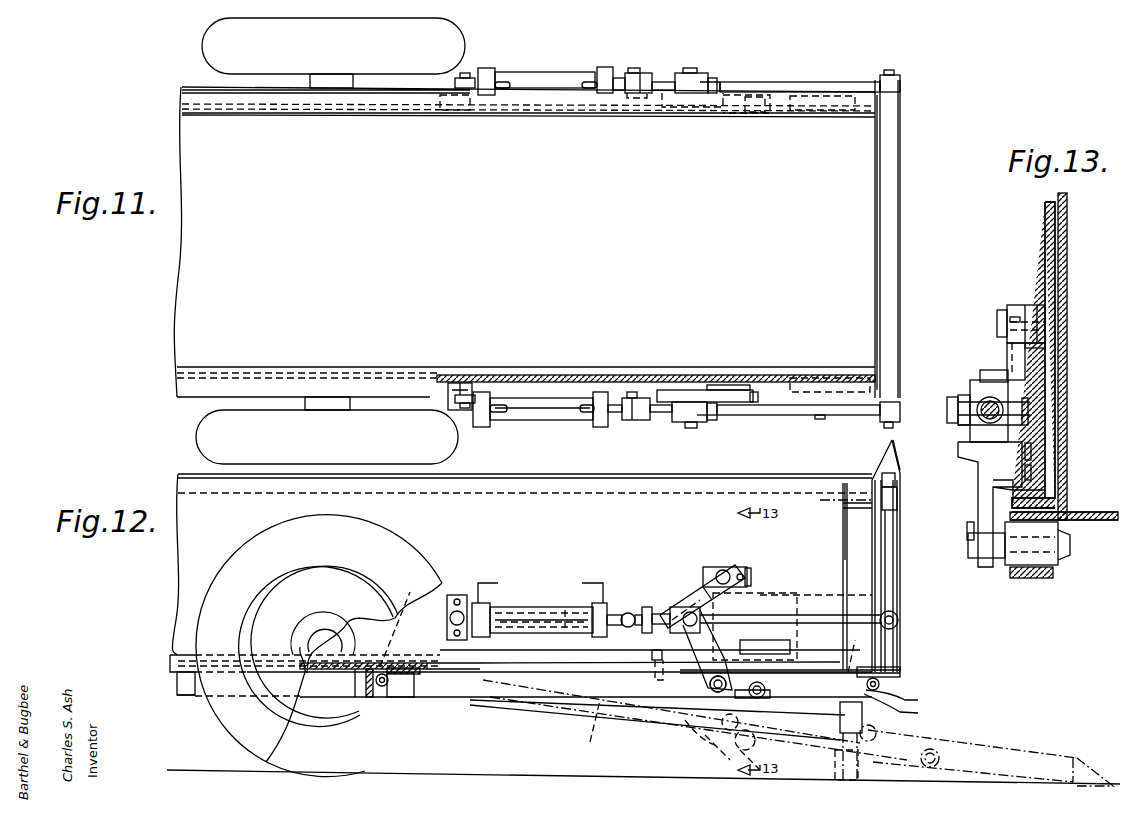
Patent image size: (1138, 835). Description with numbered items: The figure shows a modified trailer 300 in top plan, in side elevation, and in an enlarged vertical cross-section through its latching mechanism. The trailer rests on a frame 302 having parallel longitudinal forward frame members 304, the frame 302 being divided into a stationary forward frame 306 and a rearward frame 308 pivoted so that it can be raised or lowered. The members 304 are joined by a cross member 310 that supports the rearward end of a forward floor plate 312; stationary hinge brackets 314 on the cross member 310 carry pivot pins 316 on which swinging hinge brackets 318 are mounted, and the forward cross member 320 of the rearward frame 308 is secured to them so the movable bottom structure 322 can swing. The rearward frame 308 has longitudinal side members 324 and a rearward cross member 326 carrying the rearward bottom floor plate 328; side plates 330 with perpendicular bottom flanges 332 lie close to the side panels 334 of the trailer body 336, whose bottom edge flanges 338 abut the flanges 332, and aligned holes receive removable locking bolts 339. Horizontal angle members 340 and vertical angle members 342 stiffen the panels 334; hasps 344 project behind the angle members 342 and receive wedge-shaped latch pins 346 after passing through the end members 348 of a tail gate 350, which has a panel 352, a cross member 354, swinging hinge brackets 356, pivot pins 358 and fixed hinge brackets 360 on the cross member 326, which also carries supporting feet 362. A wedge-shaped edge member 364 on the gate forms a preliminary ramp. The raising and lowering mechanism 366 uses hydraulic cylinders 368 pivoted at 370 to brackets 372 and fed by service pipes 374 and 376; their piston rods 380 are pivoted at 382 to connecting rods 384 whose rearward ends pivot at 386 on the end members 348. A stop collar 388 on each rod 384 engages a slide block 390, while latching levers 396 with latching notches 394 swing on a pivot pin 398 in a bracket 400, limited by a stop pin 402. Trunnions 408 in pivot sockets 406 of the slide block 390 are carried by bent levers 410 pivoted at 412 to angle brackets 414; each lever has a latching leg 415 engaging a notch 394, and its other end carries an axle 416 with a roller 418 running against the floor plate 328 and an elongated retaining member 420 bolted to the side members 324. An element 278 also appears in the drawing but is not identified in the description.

In FIG. 12, the hydraulic conduit 278 is at (500, 630).
In FIG. 11, the modified trailer 300 is at (184, 86).
In FIG. 12, the frame 302 is at (182, 670).
In FIG. 12, the forward frame members 304 is at (186, 688).
In FIG. 12, the forward frame 306 is at (197, 700).
In FIG. 12, the rearward frame 308 is at (555, 700).
In FIG. 12, the cross member 310 is at (365, 680).
In FIG. 12, the forward floor plate 312 is at (372, 645).
In FIG. 12, the stationary hinge brackets 314 is at (373, 700).
In FIG. 12, the pivot pins 316 is at (385, 688).
In FIG. 12, the swinging hinge brackets 318 is at (400, 698).
In FIG. 12, the forward cross member 320 is at (420, 700).
In FIG. 12, the movable bottom structure 322 is at (605, 742).
In FIG. 12, the longitudinal side members 324 is at (638, 710).
In FIG. 12, the rearward cross member 326 is at (625, 632).
In FIG. 13, the rearward bottom floor plate 328 is at (1100, 512).
In FIG. 12, the side plates 330 is at (565, 605).
In FIG. 13, the side plates 330 is at (1067, 348).
In FIG. 12, the bottom flanges 332 is at (380, 660).
In FIG. 13, the bottom flanges 332 is at (1012, 510).
In FIG. 12, the side panels 334 is at (181, 580).
In FIG. 13, the side panels 334 is at (1045, 255).
In FIG. 11, the trailer body 336 is at (396, 367).
In FIG. 12, the bottom edge flanges 338 is at (547, 668).
In FIG. 13, the bottom edge flanges 338 is at (1000, 488).
In FIG. 12, the locking bolts 339 is at (652, 652).
In FIG. 11, the horizontal angle members 340 is at (241, 100).
In FIG. 11, the vertical angle members 342 is at (852, 100).
In FIG. 12, the vertical angle members 342 is at (843, 545).
In FIG. 12, the latch members 344 is at (843, 510).
In FIG. 12, the latch pins 346 is at (882, 480).
In FIG. 12, the end members 348 is at (884, 555).
In FIG. 11, the tail gate 350 is at (902, 222).
In FIG. 12, the tail gate 350 is at (905, 593).
In FIG. 11, the panel 352 is at (876, 265).
In FIG. 12, the panel 352 is at (893, 593).
In FIG. 12, the tail gate cross member 354 is at (902, 670).
In FIG. 12, the swinging hinge brackets 356 is at (882, 681).
In FIG. 12, the pivot pins 358 is at (906, 698).
In FIG. 12, the fixed hinge brackets 360 is at (905, 709).
In FIG. 12, the supporting feet 362 is at (840, 720).
In FIG. 12, the edge member 364 is at (895, 456).
In FIG. 11, the raising and lowering mechanism 366 is at (548, 395).
In FIG. 12, the raising and lowering mechanism 366 is at (545, 605).
In FIG. 11, the hydraulic cylinders 368 is at (545, 72).
In FIG. 12, the hydraulic cylinders 368 is at (535, 605).
In FIG. 11, the pivot 370 is at (465, 75).
In FIG. 11, the brackets 372 is at (446, 98).
In FIG. 12, the brackets 372 is at (463, 592).
In FIG. 11, the service pipe 374 is at (503, 80).
In FIG. 12, the service pipe 374 is at (498, 580).
In FIG. 11, the service pipe 376 is at (600, 78).
In FIG. 12, the service pipe 376 is at (600, 580).
In FIG. 11, the piston rods 380 is at (632, 72).
In FIG. 12, the piston rods 380 is at (628, 610).
In FIG. 11, the pivotal connection 382 is at (662, 78).
In FIG. 12, the pivotal connection 382 is at (645, 605).
In FIG. 11, the connecting rods 384 is at (665, 80).
In FIG. 12, the connecting rods 384 is at (816, 614).
In FIG. 13, the connecting rods 384 is at (1030, 404).
In FIG. 11, the pivot 386 is at (892, 72).
In FIG. 12, the pivot 386 is at (899, 620).
In FIG. 11, the stop collar 388 is at (722, 80).
In FIG. 12, the stop collar 388 is at (715, 590).
In FIG. 11, the slide block 390 is at (700, 82).
In FIG. 12, the slide block 390 is at (678, 630).
In FIG. 13, the slide block 390 is at (965, 430).
In FIG. 12, the latching notches 394 is at (690, 585).
In FIG. 11, the latching levers 396 is at (672, 110).
In FIG. 12, the latching levers 396 is at (706, 566).
In FIG. 13, the latching levers 396 is at (1045, 346).
In FIG. 11, the pivot pin 398 is at (752, 404).
In FIG. 12, the pivot pin 398 is at (725, 568).
In FIG. 13, the pivot pin 398 is at (997, 318).
In FIG. 11, the bracket 400 is at (725, 113).
In FIG. 12, the bracket 400 is at (740, 566).
In FIG. 13, the bracket 400 is at (1037, 305).
In FIG. 11, the stop pin 402 is at (765, 112).
In FIG. 12, the stop pin 402 is at (748, 568).
In FIG. 13, the stop pin 402 is at (1014, 316).
In FIG. 13, the pivot sockets 406 is at (980, 385).
In FIG. 11, the trunnions 408 is at (700, 68).
In FIG. 12, the trunnions 408 is at (674, 661).
In FIG. 13, the trunnions 408 is at (958, 410).
In FIG. 11, the bent levers 410 is at (720, 84).
In FIG. 12, the bent levers 410 is at (700, 690).
In FIG. 13, the bent levers 410 is at (978, 470).
In FIG. 12, the pivot 412 is at (690, 725).
In FIG. 13, the pivot 412 is at (967, 526).
In FIG. 12, the angle brackets 414 is at (752, 640).
In FIG. 13, the angle brackets 414 is at (1040, 492).
In FIG. 12, the latching leg 415 is at (695, 600).
In FIG. 13, the latching leg 415 is at (1007, 350).
In FIG. 12, the axles 416 is at (718, 694).
In FIG. 13, the axles 416 is at (968, 546).
In FIG. 12, the rollers 418 is at (706, 753).
In FIG. 13, the rollers 418 is at (1015, 560).
In FIG. 12, the retaining members 420 is at (772, 690).
In FIG. 13, the retaining members 420 is at (1030, 578).